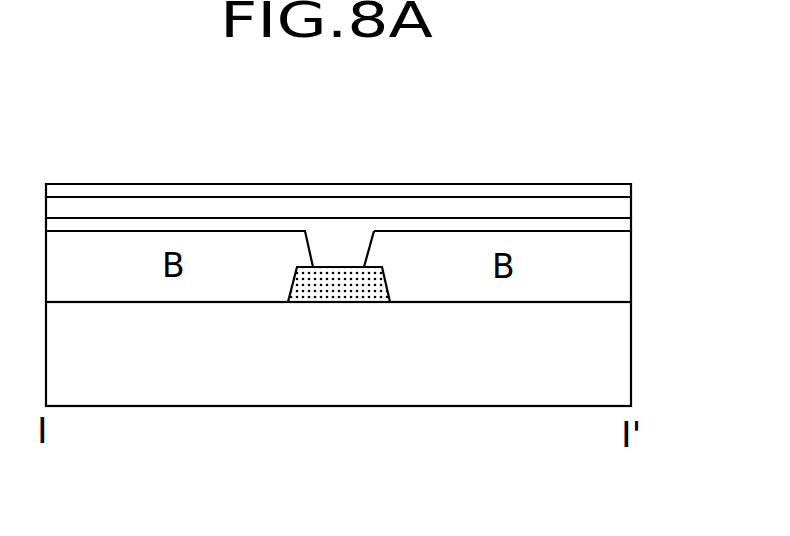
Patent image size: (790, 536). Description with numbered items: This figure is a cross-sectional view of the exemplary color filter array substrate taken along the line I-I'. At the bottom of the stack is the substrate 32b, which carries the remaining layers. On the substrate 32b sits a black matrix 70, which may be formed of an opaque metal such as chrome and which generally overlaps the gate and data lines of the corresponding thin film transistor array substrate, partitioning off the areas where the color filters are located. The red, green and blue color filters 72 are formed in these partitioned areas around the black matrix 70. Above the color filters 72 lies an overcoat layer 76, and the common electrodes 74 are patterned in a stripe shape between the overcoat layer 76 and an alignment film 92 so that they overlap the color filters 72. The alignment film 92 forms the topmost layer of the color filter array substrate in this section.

The substrate 32b is at (631, 365).
The black matrix 70 is at (343, 302).
The color filters 72 is at (631, 276).
The common electrodes 74 is at (631, 200).
The overcoat layer 76 is at (631, 232).
The alignment film 92 is at (631, 189).